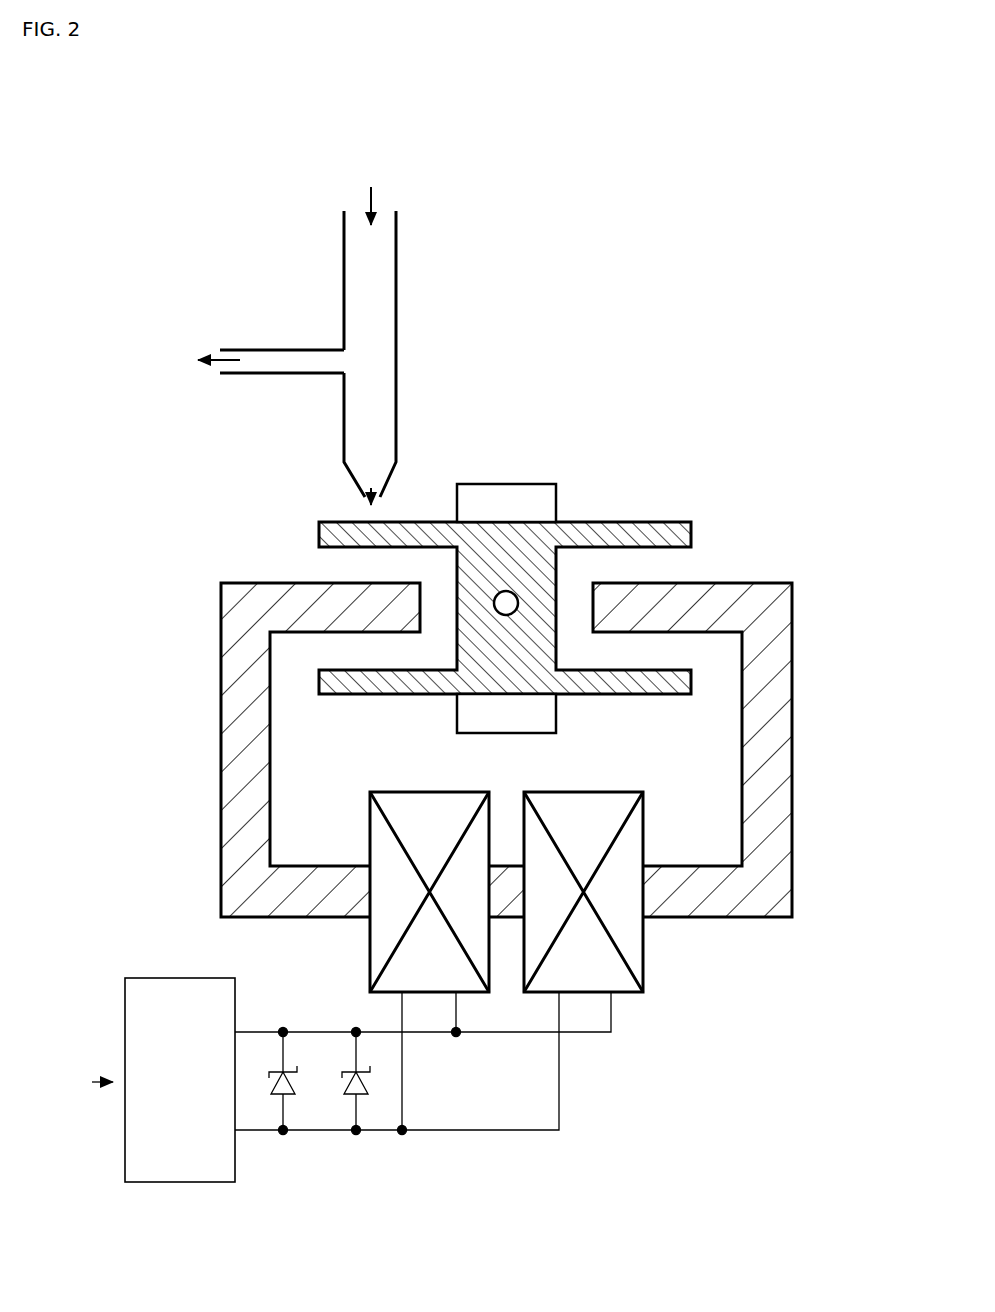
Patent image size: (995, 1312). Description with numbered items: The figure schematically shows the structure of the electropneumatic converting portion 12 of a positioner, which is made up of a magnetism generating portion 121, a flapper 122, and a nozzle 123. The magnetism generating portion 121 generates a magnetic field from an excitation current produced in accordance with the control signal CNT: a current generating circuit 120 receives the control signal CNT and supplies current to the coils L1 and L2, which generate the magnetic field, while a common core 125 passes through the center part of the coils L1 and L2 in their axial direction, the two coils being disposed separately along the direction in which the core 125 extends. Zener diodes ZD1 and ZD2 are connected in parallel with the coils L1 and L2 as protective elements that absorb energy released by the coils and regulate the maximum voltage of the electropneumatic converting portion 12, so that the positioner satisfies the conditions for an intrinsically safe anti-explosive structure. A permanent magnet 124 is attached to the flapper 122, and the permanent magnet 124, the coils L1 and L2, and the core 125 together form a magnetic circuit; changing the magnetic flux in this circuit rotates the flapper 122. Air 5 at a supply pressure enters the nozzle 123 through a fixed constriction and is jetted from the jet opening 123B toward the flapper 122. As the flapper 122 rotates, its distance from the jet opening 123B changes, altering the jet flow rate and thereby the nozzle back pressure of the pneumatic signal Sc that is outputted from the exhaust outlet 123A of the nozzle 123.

The electropneumatic converting portion 12 is at (778, 130).
The air 5 is at (369, 194).
The magnetism generating portion 121 is at (545, 853).
The flapper 122 is at (691, 522).
The nozzle 123 is at (396, 297).
The exhaust outlet 123A is at (222, 350).
The jet opening 123B is at (367, 498).
The permanent magnet 124 is at (556, 484).
The core 125 is at (241, 583).
The current generating circuit 120 is at (162, 978).
The coil L1 is at (370, 952).
The coil L2 is at (643, 952).
The Zener diode ZD1 is at (343, 1081).
The Zener diode ZD2 is at (270, 1081).
The control signal CNT is at (79, 1083).
The pneumatic signal Sc is at (195, 360).